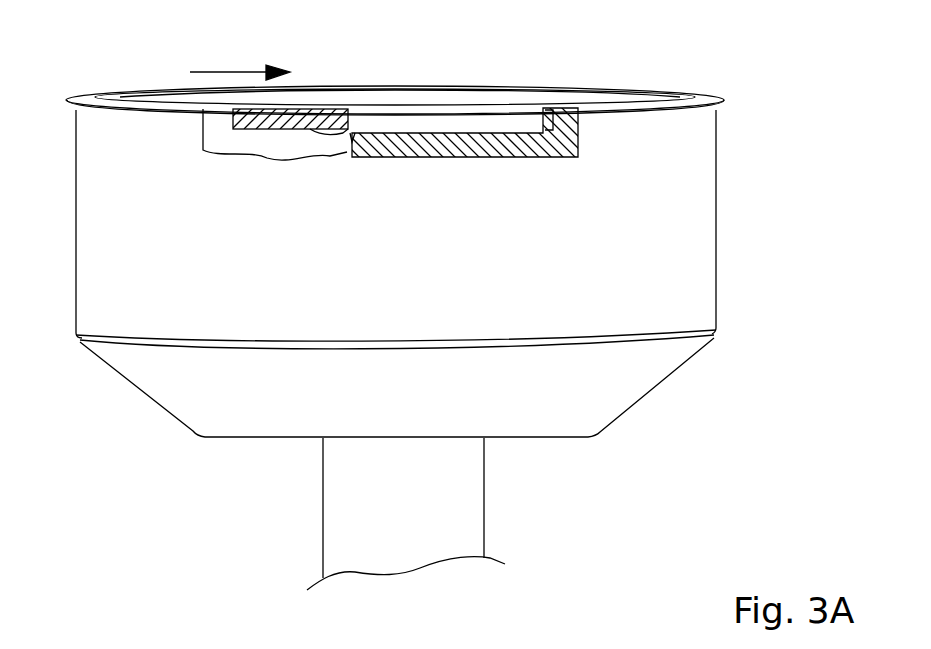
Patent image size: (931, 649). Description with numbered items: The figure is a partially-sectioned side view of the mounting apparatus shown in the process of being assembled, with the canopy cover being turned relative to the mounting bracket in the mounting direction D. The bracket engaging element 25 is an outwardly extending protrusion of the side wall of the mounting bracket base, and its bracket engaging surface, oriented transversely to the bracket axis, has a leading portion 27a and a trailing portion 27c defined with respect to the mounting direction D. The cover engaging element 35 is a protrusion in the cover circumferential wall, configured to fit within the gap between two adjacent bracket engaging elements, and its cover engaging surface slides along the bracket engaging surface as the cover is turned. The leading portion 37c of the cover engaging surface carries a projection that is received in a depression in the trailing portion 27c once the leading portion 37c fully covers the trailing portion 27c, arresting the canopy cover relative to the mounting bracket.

The bracket engaging element 25 is at (470, 134).
The leading portion of bracket engaging surface 27a is at (340, 158).
The trailing portion of bracket engaging surface 27c is at (578, 140).
The cover engaging element 35 is at (290, 117).
The leading portion of cover engaging surface 37c is at (352, 135).
The mounting direction D is at (242, 70).